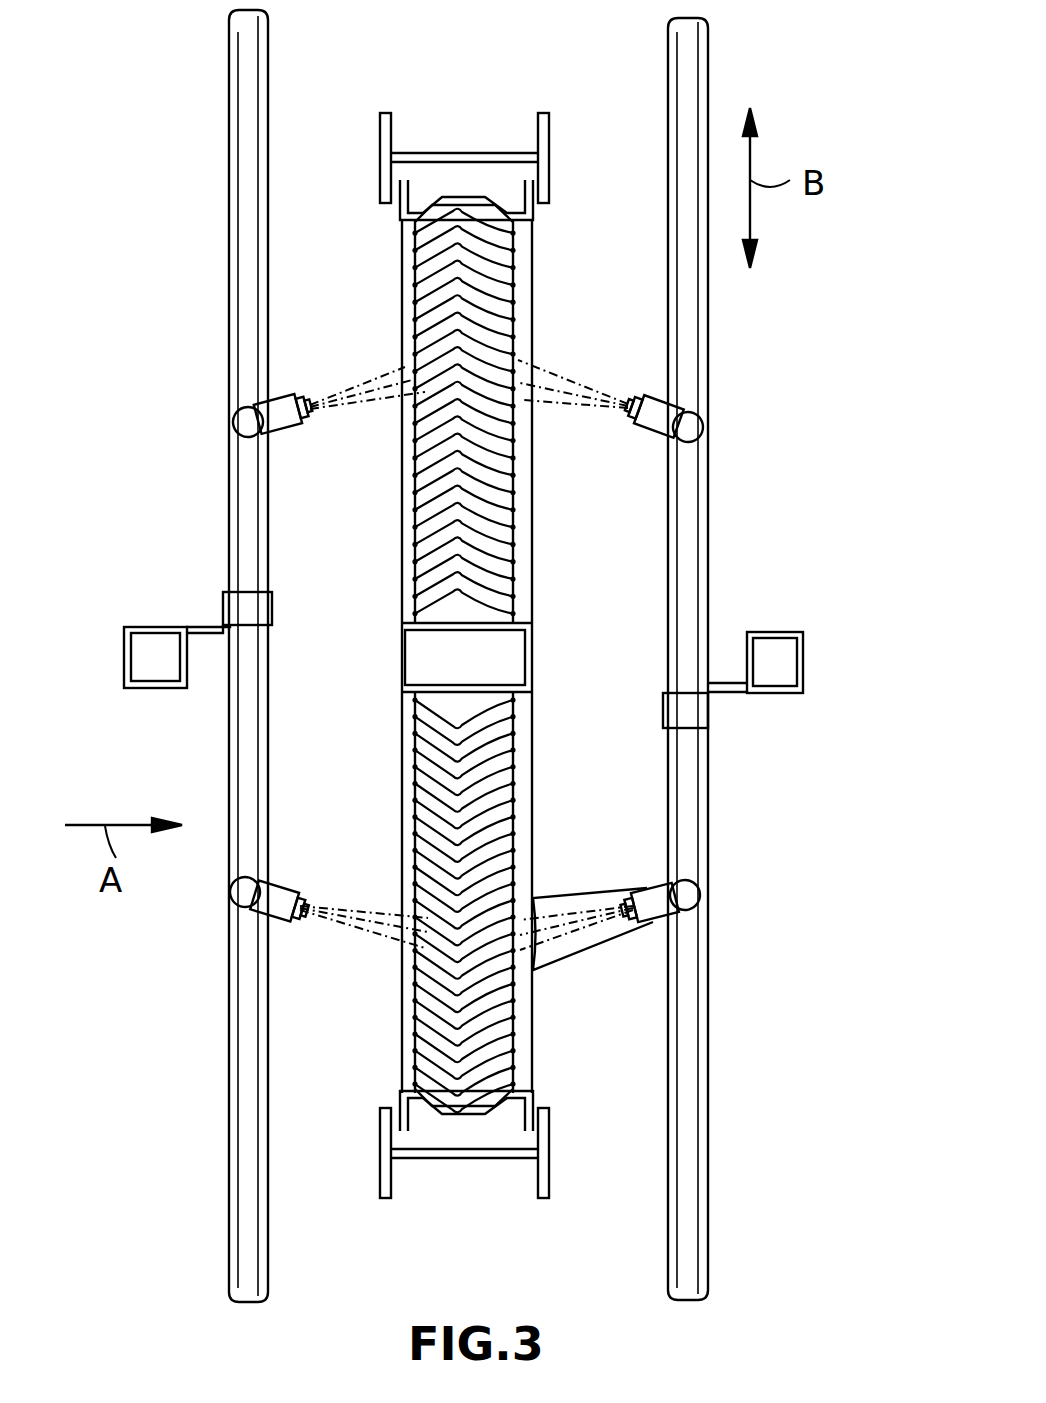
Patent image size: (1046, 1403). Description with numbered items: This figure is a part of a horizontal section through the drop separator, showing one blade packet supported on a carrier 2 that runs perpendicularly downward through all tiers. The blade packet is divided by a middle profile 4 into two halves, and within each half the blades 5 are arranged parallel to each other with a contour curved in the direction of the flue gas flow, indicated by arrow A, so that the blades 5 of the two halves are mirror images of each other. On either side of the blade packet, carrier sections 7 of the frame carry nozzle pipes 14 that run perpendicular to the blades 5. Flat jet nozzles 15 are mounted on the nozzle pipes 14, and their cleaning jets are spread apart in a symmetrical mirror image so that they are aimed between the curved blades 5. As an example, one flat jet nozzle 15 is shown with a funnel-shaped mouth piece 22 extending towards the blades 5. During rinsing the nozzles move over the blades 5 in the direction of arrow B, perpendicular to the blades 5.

The carrier 2 is at (548, 1176).
The profile 4 is at (500, 657).
The blade 5 is at (482, 310).
The carrier section 7 is at (781, 655).
The nozzle pipe 14 is at (690, 532).
The flat jet nozzle 15 is at (700, 428).
The mouth piece 22 is at (600, 947).